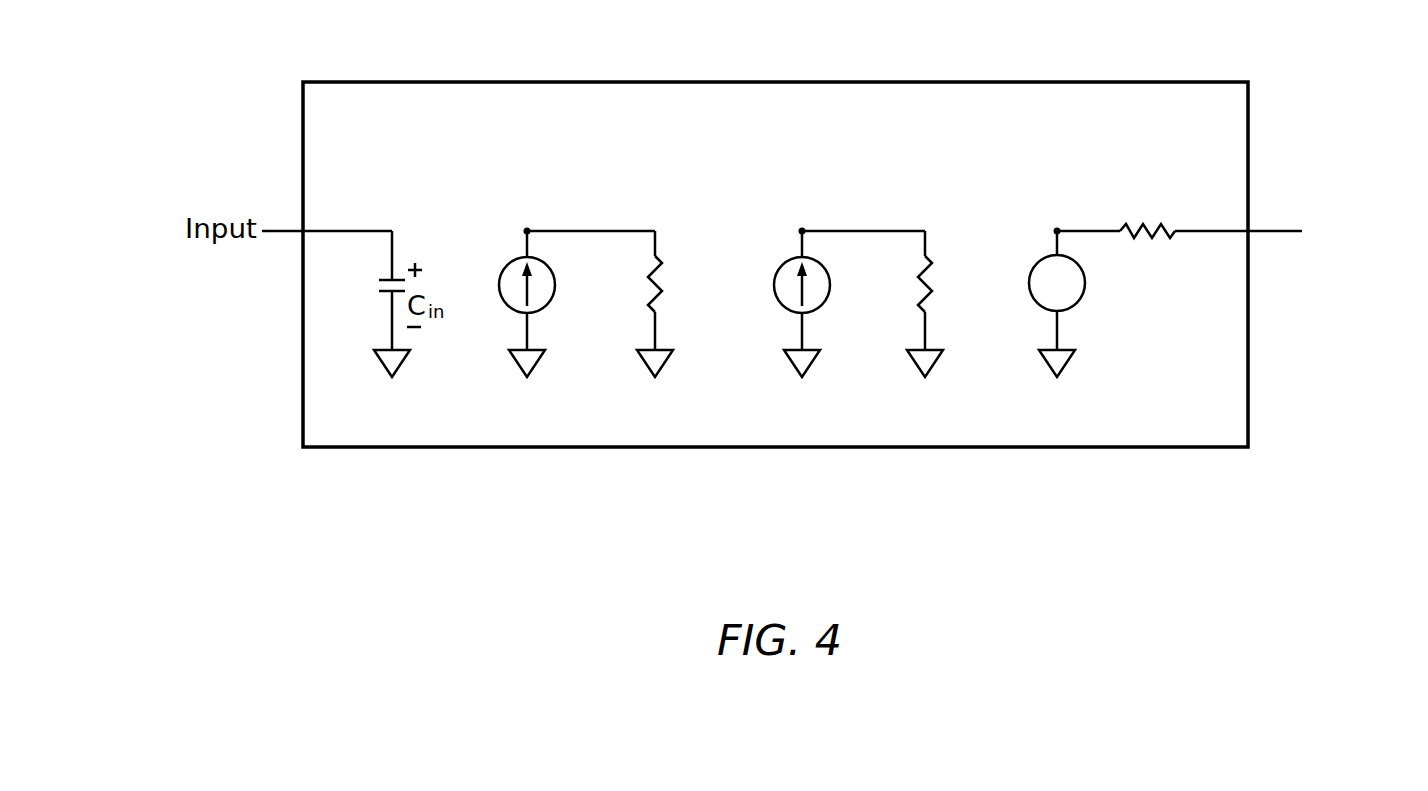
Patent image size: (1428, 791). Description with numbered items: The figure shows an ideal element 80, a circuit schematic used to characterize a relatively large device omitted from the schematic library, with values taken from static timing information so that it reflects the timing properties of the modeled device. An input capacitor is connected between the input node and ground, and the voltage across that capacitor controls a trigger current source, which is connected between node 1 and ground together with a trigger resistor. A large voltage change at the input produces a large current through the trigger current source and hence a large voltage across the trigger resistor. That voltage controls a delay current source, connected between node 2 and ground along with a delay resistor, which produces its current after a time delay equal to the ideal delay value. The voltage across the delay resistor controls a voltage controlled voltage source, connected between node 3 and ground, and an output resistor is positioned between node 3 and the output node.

The ideal element 80 is at (775, 236).
The node 1 is at (619, 284).
The node 2 is at (900, 284).
The node 3 is at (1217, 280).